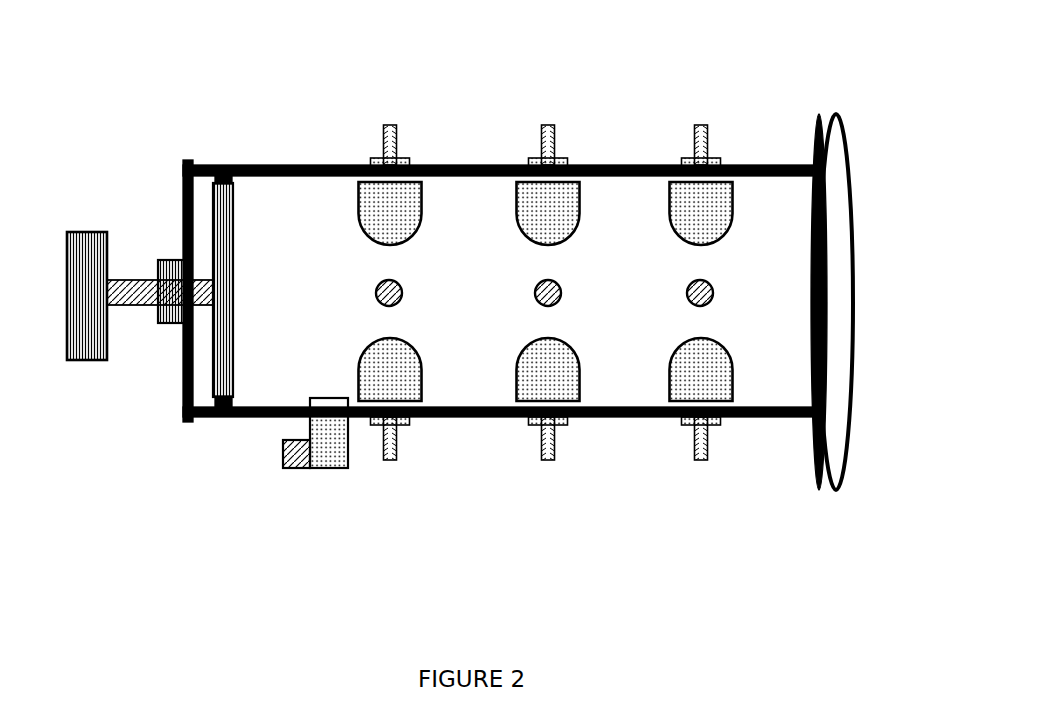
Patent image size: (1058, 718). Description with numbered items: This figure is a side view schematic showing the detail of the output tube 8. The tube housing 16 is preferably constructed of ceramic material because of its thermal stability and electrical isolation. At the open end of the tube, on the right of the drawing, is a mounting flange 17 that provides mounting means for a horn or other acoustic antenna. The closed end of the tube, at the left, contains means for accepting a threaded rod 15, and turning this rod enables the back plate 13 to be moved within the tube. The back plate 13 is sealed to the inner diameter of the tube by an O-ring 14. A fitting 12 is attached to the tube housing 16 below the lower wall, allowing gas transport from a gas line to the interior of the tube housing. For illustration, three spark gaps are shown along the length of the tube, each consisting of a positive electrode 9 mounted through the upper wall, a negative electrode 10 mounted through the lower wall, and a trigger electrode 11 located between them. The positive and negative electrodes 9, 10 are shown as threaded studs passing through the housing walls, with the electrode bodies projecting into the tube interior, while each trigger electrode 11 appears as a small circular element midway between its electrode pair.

The output tube 8 is at (496, 294).
The positive electrode 9 is at (546, 185).
The negative electrode 10 is at (546, 399).
The trigger electrode 11 is at (426, 293).
The fitting 12 is at (340, 481).
The back plate 13 is at (254, 292).
The O-ring 14 is at (279, 290).
The threaded rod 15 is at (140, 356).
The tube housing 16 is at (290, 148).
The mounting flange 17 is at (862, 480).